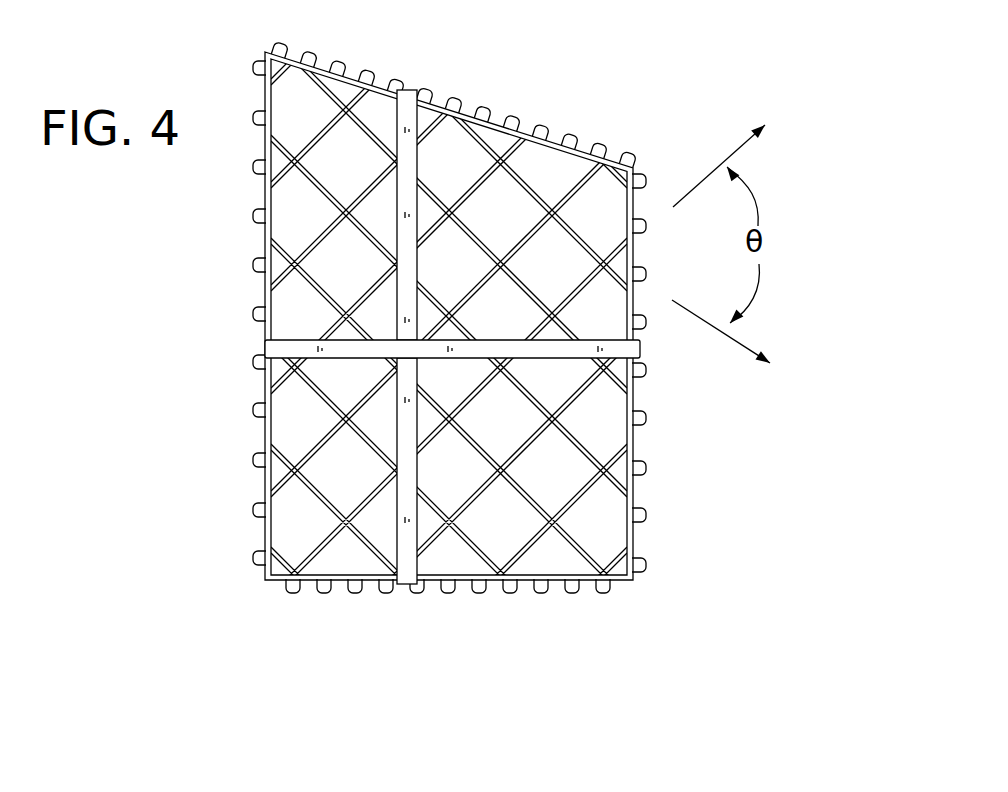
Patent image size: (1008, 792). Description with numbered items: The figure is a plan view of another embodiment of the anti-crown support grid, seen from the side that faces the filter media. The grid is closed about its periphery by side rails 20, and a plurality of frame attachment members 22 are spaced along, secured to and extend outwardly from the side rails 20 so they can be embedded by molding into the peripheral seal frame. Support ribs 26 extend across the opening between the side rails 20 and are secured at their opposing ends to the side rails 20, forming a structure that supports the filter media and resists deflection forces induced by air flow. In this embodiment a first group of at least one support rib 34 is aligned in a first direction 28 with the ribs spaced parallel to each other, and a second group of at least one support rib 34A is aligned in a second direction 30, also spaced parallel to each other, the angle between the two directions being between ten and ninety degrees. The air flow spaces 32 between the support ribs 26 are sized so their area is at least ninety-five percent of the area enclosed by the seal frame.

The side rails 20 is at (264, 430).
The frame attachment members 22 is at (580, 594).
The support ribs 26 is at (530, 497).
The first direction 28 is at (750, 120).
The second direction 30 is at (760, 347).
The air flow spaces 32 is at (340, 152).
The first group of support ribs 34 is at (297, 348).
The second group of support ribs 34A is at (408, 176).